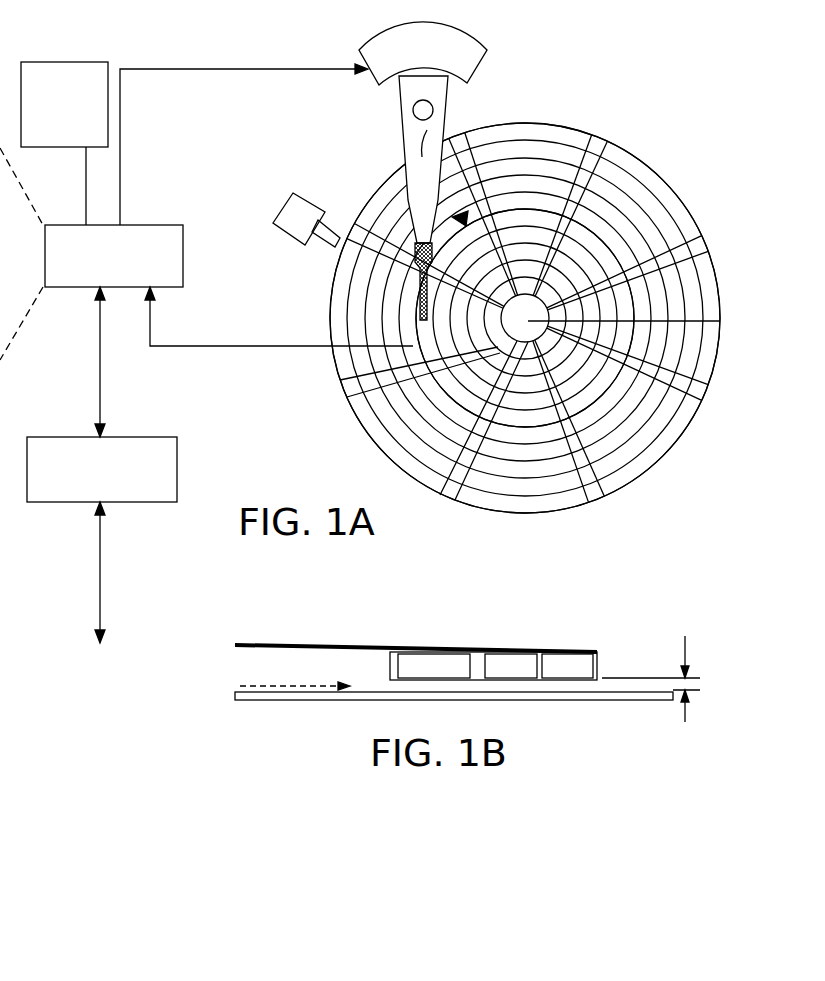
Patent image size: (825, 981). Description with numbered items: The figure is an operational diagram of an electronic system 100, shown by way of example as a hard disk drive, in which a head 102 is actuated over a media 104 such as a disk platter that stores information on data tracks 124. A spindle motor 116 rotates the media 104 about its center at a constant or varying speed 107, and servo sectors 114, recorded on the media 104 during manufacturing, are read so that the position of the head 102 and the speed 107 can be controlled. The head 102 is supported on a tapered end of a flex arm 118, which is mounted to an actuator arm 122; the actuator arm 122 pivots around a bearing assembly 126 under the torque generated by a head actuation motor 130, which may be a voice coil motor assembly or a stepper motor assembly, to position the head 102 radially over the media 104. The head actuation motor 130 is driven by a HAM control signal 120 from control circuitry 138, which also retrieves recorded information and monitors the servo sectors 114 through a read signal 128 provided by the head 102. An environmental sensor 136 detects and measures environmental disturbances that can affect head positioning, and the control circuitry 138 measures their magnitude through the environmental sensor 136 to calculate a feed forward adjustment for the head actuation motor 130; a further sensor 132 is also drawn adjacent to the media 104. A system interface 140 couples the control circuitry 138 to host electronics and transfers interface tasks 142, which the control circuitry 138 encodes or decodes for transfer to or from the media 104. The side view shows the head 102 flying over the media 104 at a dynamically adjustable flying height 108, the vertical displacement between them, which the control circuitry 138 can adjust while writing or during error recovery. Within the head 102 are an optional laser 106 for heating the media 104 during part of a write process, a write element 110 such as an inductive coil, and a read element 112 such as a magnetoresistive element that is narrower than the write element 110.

In FIG. 1A, the electronic system 100 is at (652, 30).
In FIG. 1A, the head 102 is at (335, 344).
In FIG. 1B, the head 102 is at (608, 665).
In FIG. 1A, the media 104 is at (657, 168).
In FIG. 1B, the media 104 is at (320, 700).
In FIG. 1B, the laser 106 is at (452, 652).
In FIG. 1A, the speed 107 is at (541, 130).
In FIG. 1B, the speed 107 is at (275, 685).
In FIG. 1B, the flying height 108 is at (690, 650).
In FIG. 1B, the write element 110 is at (525, 652).
In FIG. 1B, the read element 112 is at (590, 652).
In FIG. 1A, the servo sectors 114 is at (596, 492).
In FIG. 1A, the spindle motor 116 is at (640, 285).
In FIG. 1A, the flex arm 118 is at (410, 278).
In FIG. 1B, the flex arm 118 is at (343, 645).
In FIG. 1A, the HAM control signal 120 is at (121, 140).
In FIG. 1A, the actuator arm 122 is at (438, 118).
In FIG. 1A, the data tracks 124 is at (421, 430).
In FIG. 1A, the bearing assembly 126 is at (408, 124).
In FIG. 1A, the read signal 128 is at (243, 347).
In FIG. 1A, the head actuation motor 130 is at (452, 52).
In FIG. 1A, the sensor 132 is at (318, 226).
In FIG. 1A, the environmental sensor 136 is at (64, 143).
In FIG. 1A, the control circuitry 138 is at (175, 240).
In FIG. 1A, the system interface 140 is at (115, 497).
In FIG. 1A, the interface tasks 142 is at (120, 378).